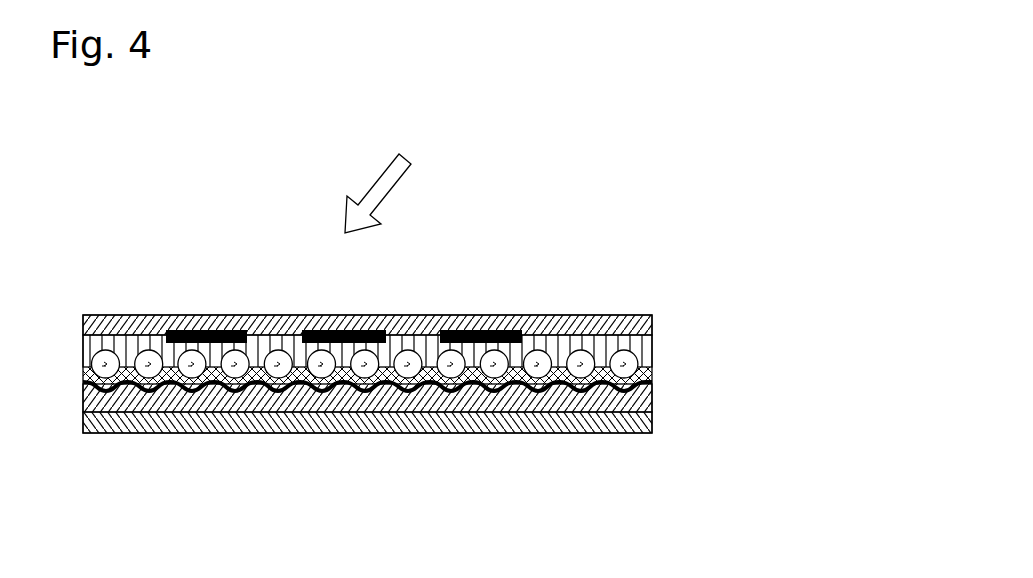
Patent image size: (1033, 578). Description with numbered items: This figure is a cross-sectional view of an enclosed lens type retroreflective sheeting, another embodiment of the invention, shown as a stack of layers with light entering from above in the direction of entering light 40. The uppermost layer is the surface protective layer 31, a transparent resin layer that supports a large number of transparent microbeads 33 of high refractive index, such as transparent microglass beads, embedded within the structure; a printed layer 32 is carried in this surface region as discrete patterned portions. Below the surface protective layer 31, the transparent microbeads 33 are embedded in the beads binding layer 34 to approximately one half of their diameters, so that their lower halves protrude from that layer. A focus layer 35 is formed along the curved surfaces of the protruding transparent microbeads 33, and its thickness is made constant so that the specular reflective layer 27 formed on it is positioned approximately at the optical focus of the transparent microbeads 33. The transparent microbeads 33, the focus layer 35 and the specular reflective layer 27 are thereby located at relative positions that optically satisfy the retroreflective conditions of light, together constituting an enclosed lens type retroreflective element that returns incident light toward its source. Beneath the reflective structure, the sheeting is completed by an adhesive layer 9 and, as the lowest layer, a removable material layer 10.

The adhesive layer 9 is at (618, 403).
The removable material layer 10 is at (618, 427).
The specular reflective layer 27 is at (637, 389).
The surface protective layer 31 is at (617, 325).
The printed layer 32 is at (363, 326).
The transparent microbeads 33 is at (623, 362).
The beads binding layer 34 is at (615, 343).
The focus layer 35 is at (640, 378).
The direction of entering light 40 is at (397, 185).